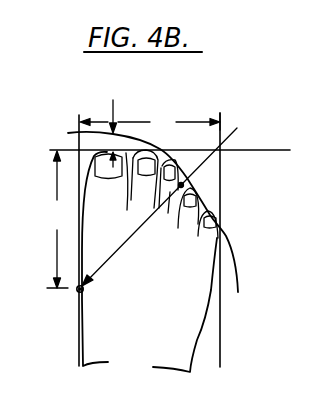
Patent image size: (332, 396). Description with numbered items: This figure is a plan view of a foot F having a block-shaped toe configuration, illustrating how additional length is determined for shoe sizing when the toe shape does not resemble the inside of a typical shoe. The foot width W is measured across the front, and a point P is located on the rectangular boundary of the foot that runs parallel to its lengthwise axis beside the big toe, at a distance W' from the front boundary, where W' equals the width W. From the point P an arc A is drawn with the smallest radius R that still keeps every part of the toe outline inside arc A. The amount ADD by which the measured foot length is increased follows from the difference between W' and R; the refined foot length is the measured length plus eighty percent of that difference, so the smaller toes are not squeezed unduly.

The foot F is at (192, 344).
The arc A is at (194, 188).
The radius R is at (159, 207).
The point P is at (77, 291).
The width of the foot W is at (150, 124).
The distance W' is at (54, 219).
The added width ADD is at (114, 121).